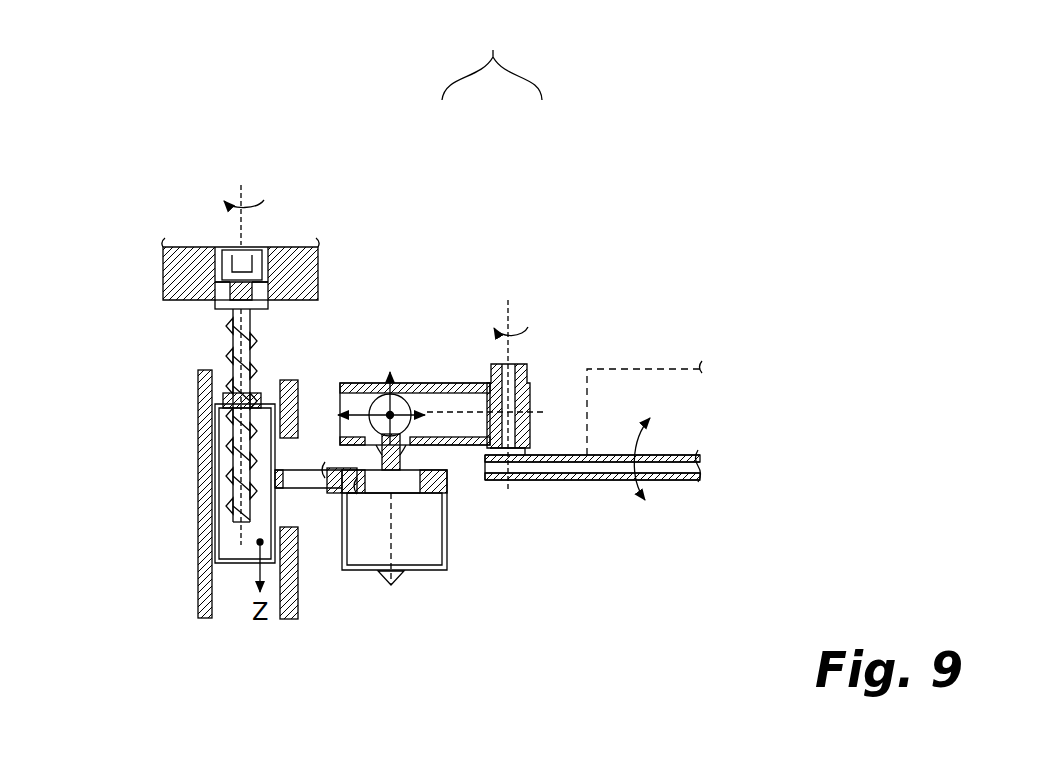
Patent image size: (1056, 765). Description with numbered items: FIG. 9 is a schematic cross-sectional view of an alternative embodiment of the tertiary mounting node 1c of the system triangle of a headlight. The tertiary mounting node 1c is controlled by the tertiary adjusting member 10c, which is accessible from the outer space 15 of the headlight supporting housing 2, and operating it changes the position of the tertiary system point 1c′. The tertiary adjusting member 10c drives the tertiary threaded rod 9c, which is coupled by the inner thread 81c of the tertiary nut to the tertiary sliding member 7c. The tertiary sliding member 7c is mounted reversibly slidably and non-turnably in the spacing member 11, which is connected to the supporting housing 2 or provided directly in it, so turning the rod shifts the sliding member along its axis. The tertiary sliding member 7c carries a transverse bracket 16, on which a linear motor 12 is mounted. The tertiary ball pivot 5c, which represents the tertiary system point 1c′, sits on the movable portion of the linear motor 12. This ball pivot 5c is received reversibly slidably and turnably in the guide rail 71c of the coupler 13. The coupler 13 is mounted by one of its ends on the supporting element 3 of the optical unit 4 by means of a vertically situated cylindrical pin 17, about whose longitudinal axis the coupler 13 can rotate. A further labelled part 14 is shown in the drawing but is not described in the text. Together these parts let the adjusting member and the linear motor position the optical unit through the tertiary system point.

The tertiary mounting node 1c is at (902, 158).
The tertiary system point 1c′ is at (422, 487).
The supporting housing 2 is at (190, 279).
The supporting element 3 is at (678, 485).
The optical unit 4 is at (686, 365).
The tertiary ball pivot 5c is at (376, 440).
The tertiary sliding member 7c is at (228, 568).
The tertiary threaded rod 9c is at (226, 327).
The tertiary adjusting member 10c is at (228, 240).
The spacing member 11 is at (196, 458).
The linear motor 12 is at (452, 541).
The coupler 13 is at (492, 57).
The bearing 14 is at (305, 325).
The outer space 15 is at (286, 232).
The transverse bracket 16 is at (303, 492).
The cylindrical pin 17 is at (510, 360).
The guide rail 71c is at (443, 396).
The inner thread 81c is at (246, 397).